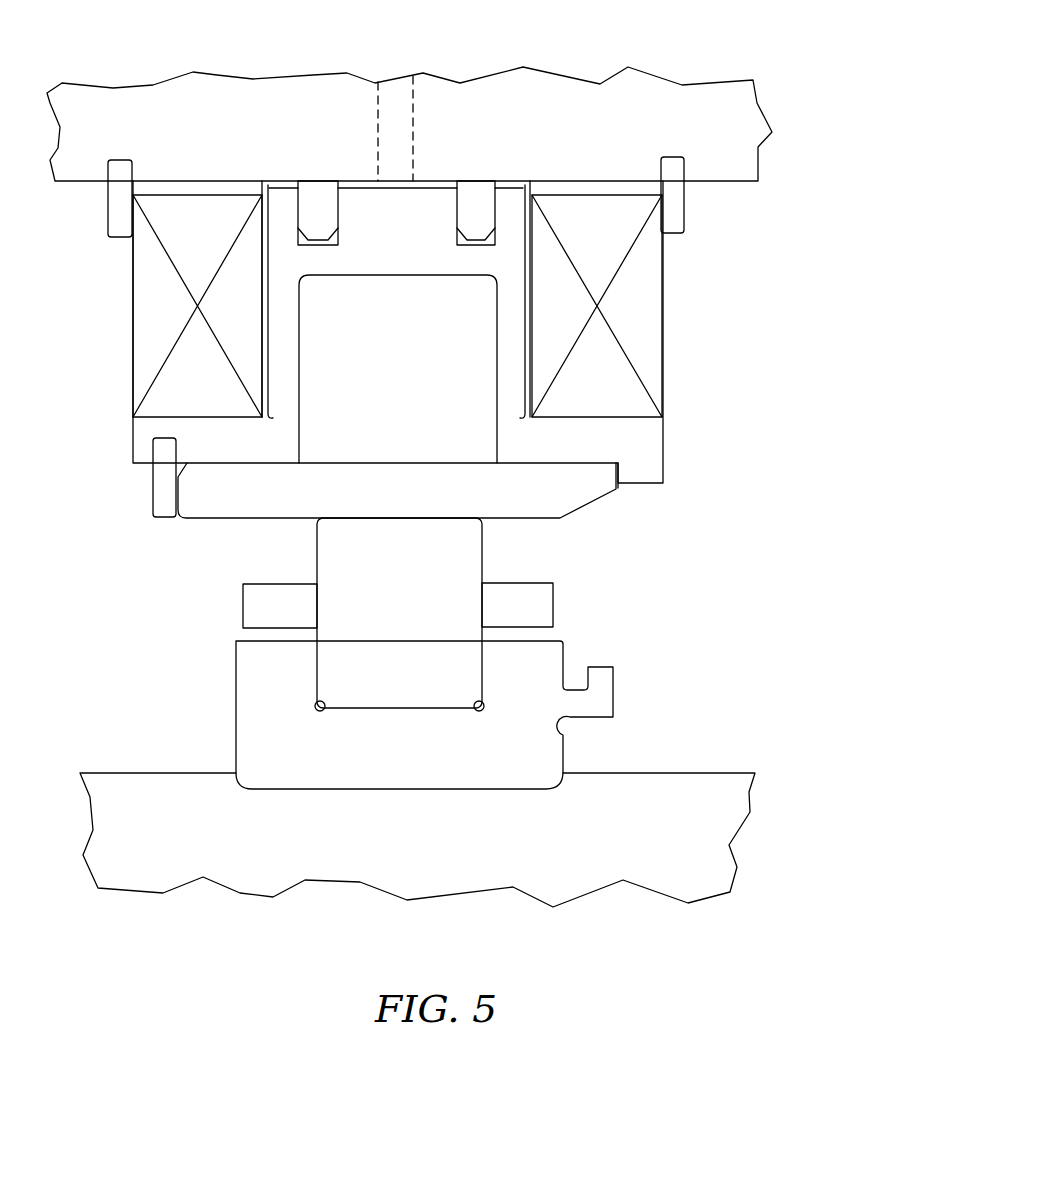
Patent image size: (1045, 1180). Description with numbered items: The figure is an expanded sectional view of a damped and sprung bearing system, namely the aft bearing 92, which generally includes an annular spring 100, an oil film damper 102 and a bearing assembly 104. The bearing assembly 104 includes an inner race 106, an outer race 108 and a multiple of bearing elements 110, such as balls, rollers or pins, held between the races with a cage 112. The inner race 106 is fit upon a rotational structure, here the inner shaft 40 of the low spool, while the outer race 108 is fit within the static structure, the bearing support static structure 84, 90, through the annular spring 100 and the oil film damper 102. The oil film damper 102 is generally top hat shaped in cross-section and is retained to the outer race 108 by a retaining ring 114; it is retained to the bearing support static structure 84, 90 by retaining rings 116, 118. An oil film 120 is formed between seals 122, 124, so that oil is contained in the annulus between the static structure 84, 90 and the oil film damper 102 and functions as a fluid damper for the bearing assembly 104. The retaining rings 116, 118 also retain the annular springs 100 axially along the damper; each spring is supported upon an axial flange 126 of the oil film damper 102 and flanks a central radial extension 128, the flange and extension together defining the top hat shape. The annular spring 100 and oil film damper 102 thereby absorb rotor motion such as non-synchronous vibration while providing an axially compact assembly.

The bearing support static structure 84 is at (409, 95).
The bearing support static structure 90 is at (670, 110).
The aft bearing 92 is at (447, 352).
The annular spring 100 is at (165, 312).
The oil film damper 102 is at (390, 264).
The bearing assembly 104 is at (477, 653).
The inner race 106 is at (547, 752).
The outer race 108 is at (548, 497).
The bearing elements 110 is at (418, 631).
The cage 112 is at (540, 600).
The retaining ring 114 is at (163, 503).
The retaining ring 116 is at (117, 222).
The retaining ring 118 is at (675, 208).
The oil film 120 is at (363, 187).
The seal 122 is at (315, 190).
The seal 124 is at (480, 190).
The axial flange 126 is at (622, 433).
The central radial extension 128 is at (370, 255).
The inner shaft 40 is at (692, 822).